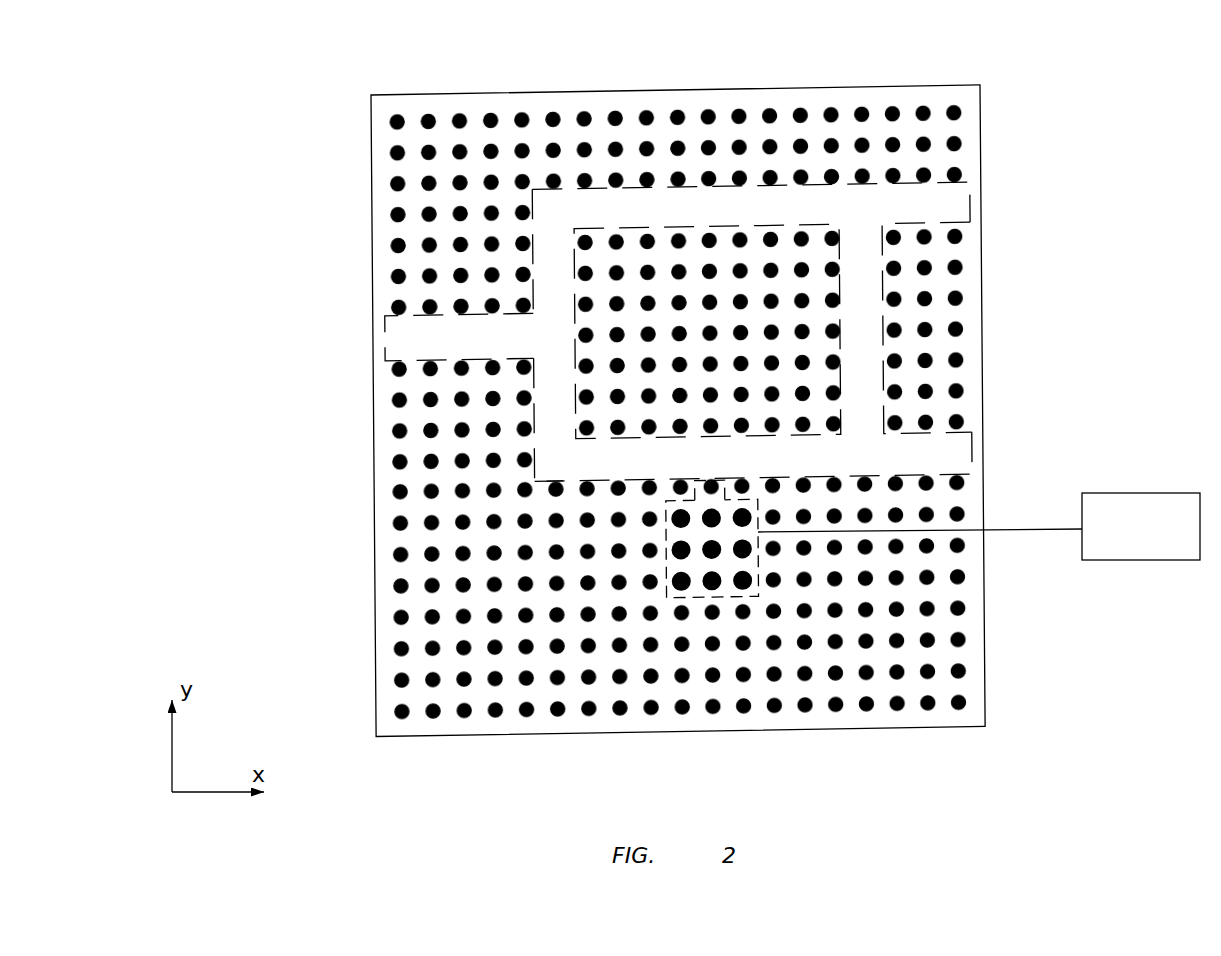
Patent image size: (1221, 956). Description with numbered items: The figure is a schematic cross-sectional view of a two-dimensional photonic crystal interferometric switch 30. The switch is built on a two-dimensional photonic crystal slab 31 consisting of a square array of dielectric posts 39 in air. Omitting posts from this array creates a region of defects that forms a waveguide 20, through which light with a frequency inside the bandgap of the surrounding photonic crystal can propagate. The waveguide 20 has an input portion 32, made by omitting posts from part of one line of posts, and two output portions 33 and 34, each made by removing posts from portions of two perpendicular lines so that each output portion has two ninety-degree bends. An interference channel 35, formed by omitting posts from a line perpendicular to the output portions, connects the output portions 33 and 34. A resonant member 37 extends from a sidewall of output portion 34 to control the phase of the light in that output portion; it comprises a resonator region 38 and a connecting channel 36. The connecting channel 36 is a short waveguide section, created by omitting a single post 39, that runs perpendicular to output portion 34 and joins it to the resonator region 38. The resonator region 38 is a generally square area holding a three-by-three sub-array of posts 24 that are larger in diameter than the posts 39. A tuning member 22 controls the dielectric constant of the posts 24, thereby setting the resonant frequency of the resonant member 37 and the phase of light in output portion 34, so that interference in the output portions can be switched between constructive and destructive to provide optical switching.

The waveguide 20 is at (787, 185).
The tuning member 22 is at (1125, 492).
The posts 24 is at (718, 558).
The photonic crystal interferometric switch 30 is at (690, 413).
The two-dimensional photonic crystal slab 31 is at (681, 88).
The input portion 32 is at (417, 338).
The output portion 33 is at (573, 213).
The output portion 34 is at (573, 460).
The interference channel 35 is at (868, 333).
The connecting channel 36 is at (707, 497).
The resonant member 37 is at (859, 648).
The resonator region 38 is at (693, 567).
The dielectric posts 39 is at (558, 722).